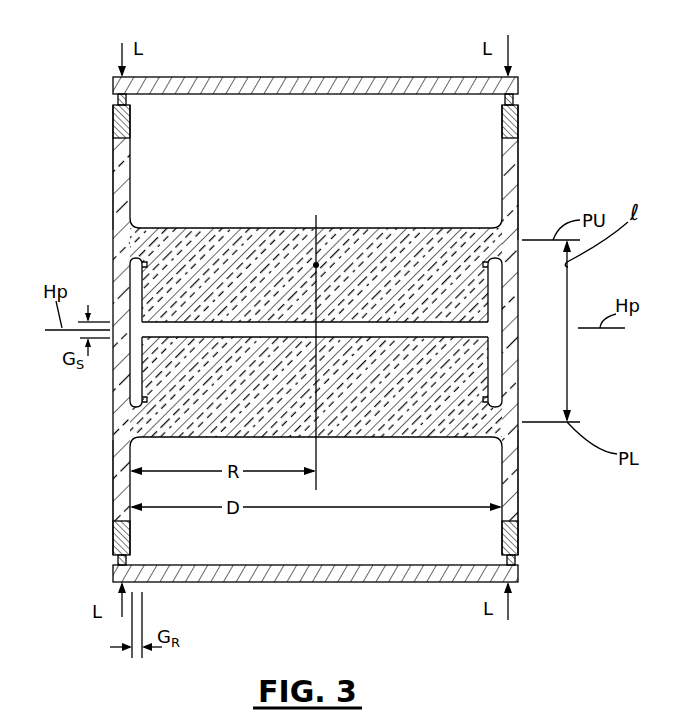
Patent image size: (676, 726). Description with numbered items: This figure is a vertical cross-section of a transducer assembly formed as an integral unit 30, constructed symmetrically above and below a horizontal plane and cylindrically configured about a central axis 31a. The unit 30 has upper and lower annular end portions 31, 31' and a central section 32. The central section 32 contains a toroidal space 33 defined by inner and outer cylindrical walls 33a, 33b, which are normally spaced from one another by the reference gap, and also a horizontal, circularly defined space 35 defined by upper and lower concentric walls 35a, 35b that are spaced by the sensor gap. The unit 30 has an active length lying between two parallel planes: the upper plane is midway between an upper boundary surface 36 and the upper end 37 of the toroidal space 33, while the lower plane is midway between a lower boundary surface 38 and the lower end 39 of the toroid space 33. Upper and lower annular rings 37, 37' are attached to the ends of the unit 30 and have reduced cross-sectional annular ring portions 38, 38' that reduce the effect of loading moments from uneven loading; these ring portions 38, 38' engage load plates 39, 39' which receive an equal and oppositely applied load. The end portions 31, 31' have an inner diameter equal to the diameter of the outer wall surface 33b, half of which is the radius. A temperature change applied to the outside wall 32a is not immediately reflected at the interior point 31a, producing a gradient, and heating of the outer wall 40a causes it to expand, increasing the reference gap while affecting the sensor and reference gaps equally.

The integral unit 30 is at (584, 273).
The upper annular end portion 31 is at (568, 189).
The lower annular end portion 31' is at (564, 475).
The central axis 31a is at (316, 265).
The central section 32 is at (522, 355).
The outside wall 32a is at (113, 158).
The toroidal space 33 is at (497, 319).
The inner cylindrical wall 33a is at (491, 366).
The outer cylindrical wall 33b is at (497, 375).
The horizontal circularly defined space 35 is at (381, 333).
The upper concentric wall 35a is at (190, 332).
The lower concentric wall 35b is at (345, 332).
The upper boundary surface 36 is at (340, 228).
The upper annular ring 37 is at (356, 181).
The lower annular ring 37' is at (363, 535).
The upper reduced cross-section ring portion 38 is at (358, 298).
The lower reduced cross-section ring portion 38' is at (364, 570).
The upper load plate 39 is at (355, 271).
The lower load plate 39' is at (358, 593).
The outer wall 40a is at (113, 463).